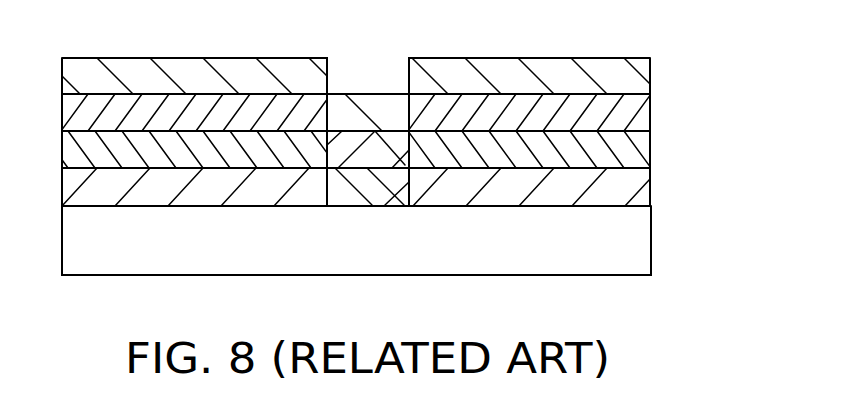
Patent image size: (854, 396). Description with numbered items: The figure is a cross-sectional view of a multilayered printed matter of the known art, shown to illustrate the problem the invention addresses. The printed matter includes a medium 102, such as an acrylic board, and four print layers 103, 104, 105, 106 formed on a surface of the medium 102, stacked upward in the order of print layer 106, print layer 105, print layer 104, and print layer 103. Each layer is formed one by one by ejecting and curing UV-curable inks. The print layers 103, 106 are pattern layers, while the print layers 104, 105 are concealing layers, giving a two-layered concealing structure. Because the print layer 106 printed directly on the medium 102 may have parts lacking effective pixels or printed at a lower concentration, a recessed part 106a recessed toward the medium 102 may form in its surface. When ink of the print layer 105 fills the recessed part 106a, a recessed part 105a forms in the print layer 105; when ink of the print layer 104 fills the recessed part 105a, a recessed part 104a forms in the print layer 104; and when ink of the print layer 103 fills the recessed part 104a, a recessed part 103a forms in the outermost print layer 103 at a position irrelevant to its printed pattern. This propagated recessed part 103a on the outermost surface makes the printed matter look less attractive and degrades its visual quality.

The medium 102 is at (652, 246).
The print layer 103 is at (652, 83).
The print layer 104 is at (651, 120).
The print layer 105 is at (652, 150).
The print layer 106 is at (652, 195).
The recessed part 103a is at (328, 73).
The recessed part 104a is at (408, 108).
The recessed part 105a is at (339, 170).
The recessed part 106a is at (408, 191).